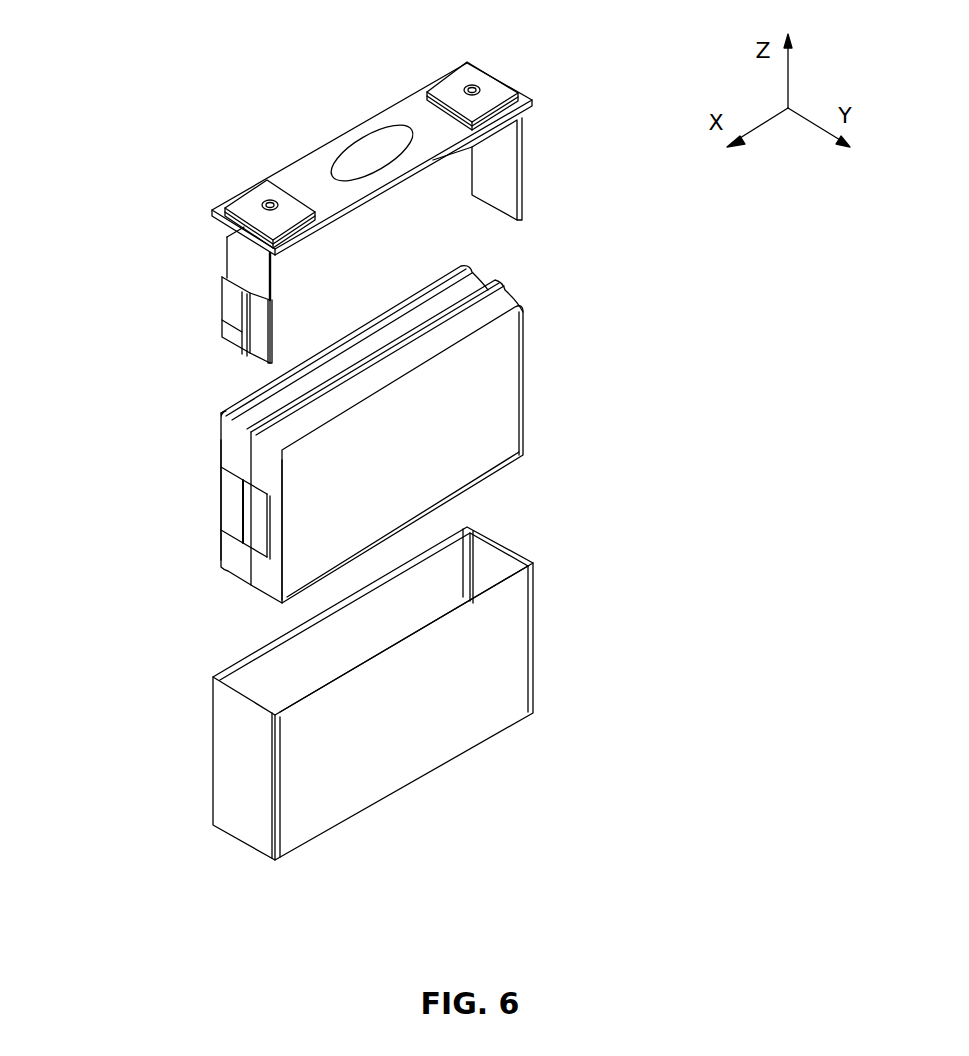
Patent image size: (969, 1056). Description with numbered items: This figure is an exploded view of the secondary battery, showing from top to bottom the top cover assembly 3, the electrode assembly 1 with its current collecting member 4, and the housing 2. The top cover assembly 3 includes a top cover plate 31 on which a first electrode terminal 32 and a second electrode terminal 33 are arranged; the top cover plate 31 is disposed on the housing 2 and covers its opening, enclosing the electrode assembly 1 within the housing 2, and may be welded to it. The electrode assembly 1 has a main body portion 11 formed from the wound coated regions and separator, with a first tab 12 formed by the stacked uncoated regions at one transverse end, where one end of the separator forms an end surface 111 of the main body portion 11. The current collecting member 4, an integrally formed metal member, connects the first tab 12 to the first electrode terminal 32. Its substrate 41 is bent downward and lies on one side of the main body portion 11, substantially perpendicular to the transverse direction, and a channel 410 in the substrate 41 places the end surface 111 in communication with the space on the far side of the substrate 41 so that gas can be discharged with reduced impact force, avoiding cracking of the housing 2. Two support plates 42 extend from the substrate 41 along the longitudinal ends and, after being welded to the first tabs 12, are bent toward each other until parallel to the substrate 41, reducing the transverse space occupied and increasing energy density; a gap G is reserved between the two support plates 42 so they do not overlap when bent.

The electrode assembly 1 is at (558, 312).
The main body portion 11 is at (507, 413).
The end surface 111 is at (233, 455).
The first tab 12 is at (228, 510).
The housing 2 is at (518, 653).
The top cover assembly 3 is at (231, 73).
The top cover plate 31 is at (313, 160).
The first electrode terminal 32 is at (252, 203).
The second electrode terminal 33 is at (460, 83).
The current collecting member 4 is at (148, 308).
The substrate 41 is at (236, 258).
The channel 410 is at (250, 292).
The support plates 42 is at (258, 358).
The gap G is at (240, 318).